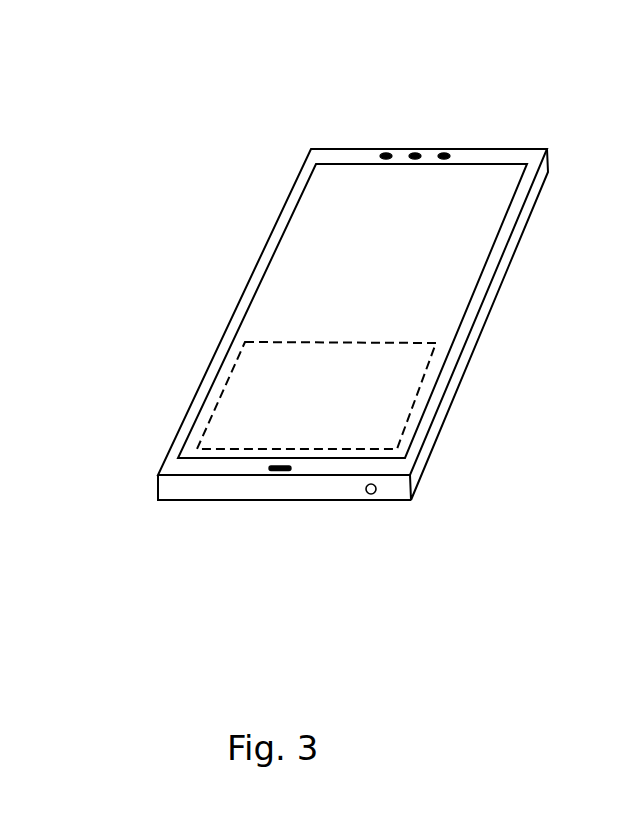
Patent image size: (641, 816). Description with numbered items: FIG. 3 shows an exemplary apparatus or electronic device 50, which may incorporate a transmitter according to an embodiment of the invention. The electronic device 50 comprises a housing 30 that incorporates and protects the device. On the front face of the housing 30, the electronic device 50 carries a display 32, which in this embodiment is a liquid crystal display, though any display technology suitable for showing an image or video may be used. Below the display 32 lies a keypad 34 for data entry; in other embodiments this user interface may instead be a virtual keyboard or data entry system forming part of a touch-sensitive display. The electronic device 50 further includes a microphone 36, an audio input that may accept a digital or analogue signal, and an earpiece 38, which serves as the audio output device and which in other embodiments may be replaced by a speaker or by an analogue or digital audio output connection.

The electronic device 50 is at (568, 121).
The housing 30 is at (323, 149).
The display 32 is at (465, 255).
The keypad 34 is at (400, 412).
The microphone 36 is at (284, 472).
The earpiece 38 is at (415, 150).